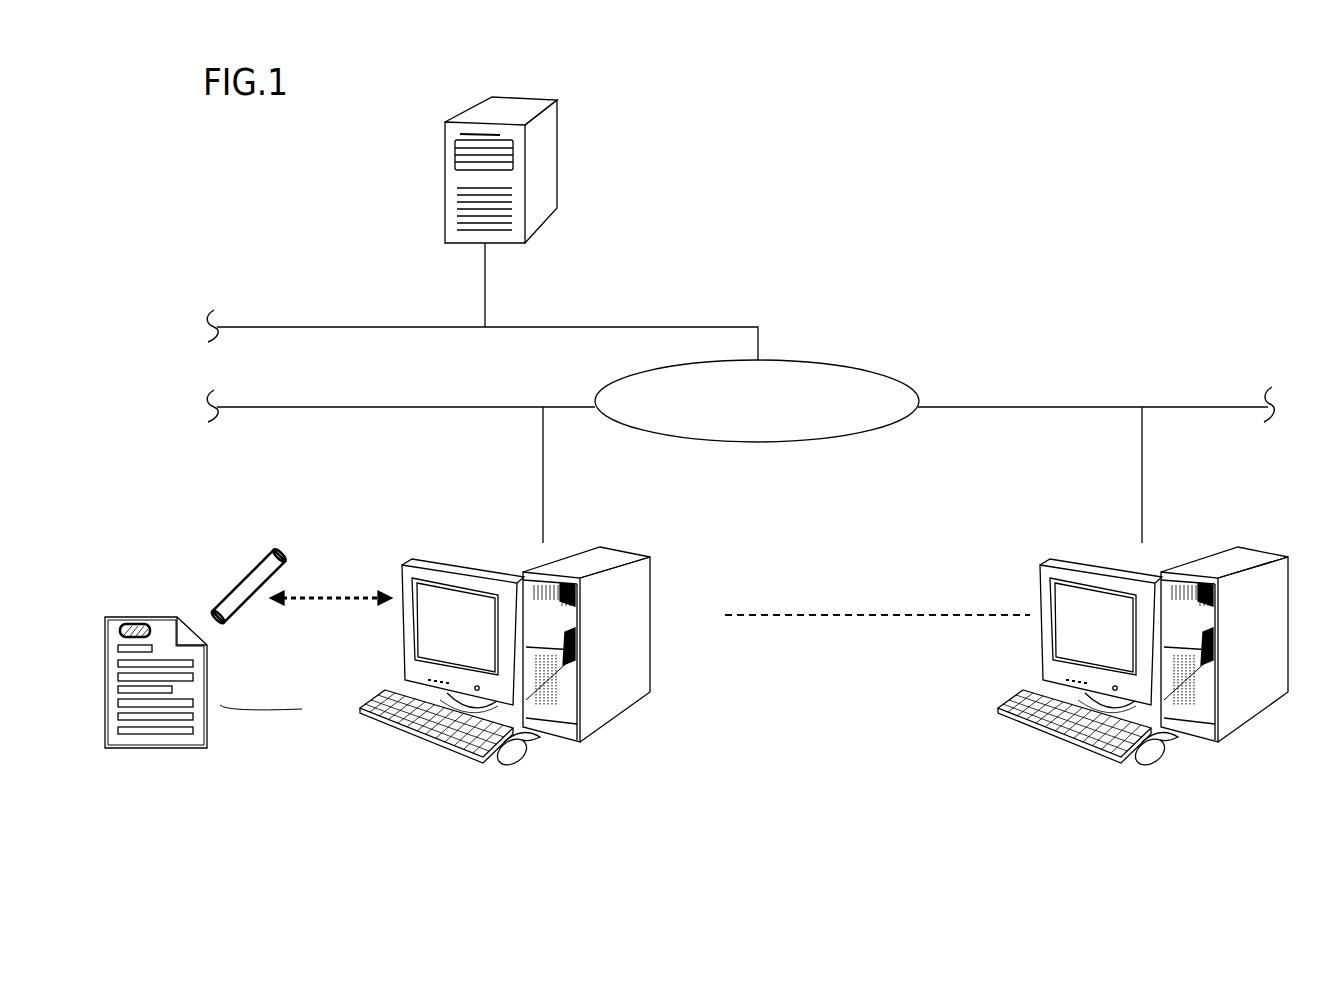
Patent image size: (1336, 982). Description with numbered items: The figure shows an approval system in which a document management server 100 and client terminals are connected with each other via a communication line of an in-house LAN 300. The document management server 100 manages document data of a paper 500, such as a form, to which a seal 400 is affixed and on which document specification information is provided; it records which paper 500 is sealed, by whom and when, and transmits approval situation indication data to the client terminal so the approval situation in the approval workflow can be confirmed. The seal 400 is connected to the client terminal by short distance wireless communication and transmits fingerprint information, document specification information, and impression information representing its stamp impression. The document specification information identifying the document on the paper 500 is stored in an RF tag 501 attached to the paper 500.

The document management server 100 is at (545, 101).
The in-house LAN 300 is at (815, 362).
The seal 400 is at (280, 553).
The paper 500 is at (172, 618).
The RF tag 501 is at (133, 620).